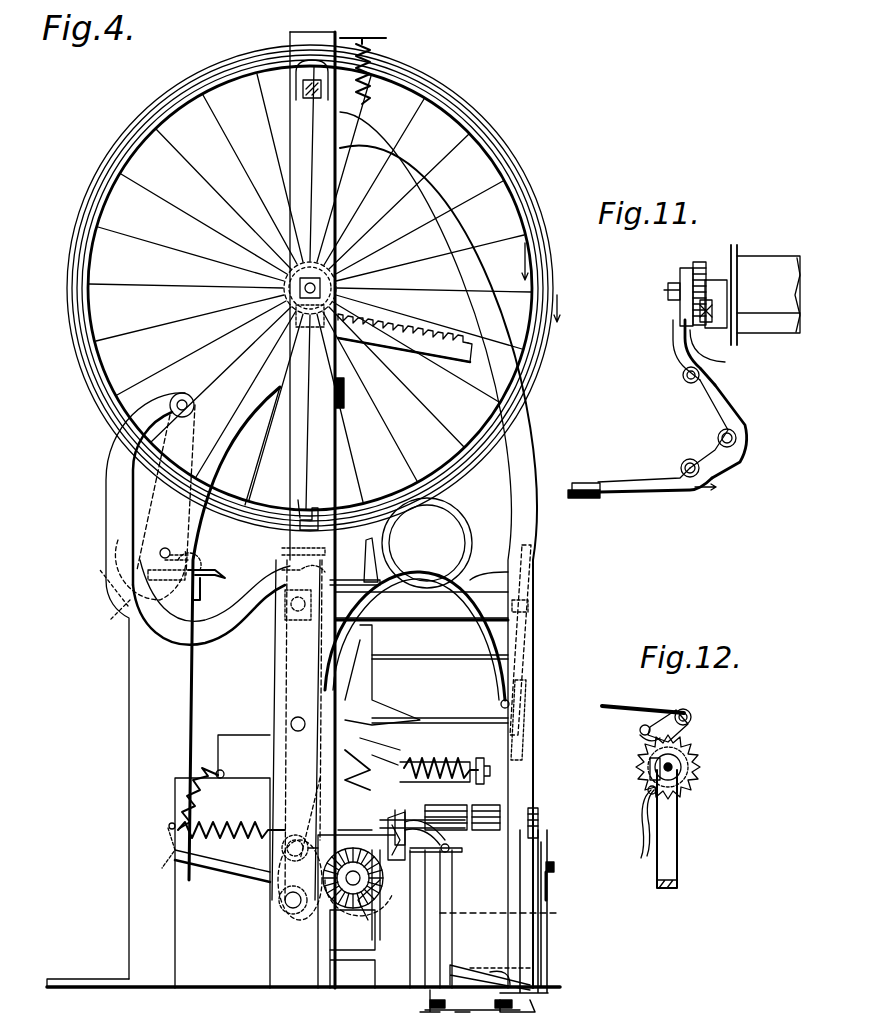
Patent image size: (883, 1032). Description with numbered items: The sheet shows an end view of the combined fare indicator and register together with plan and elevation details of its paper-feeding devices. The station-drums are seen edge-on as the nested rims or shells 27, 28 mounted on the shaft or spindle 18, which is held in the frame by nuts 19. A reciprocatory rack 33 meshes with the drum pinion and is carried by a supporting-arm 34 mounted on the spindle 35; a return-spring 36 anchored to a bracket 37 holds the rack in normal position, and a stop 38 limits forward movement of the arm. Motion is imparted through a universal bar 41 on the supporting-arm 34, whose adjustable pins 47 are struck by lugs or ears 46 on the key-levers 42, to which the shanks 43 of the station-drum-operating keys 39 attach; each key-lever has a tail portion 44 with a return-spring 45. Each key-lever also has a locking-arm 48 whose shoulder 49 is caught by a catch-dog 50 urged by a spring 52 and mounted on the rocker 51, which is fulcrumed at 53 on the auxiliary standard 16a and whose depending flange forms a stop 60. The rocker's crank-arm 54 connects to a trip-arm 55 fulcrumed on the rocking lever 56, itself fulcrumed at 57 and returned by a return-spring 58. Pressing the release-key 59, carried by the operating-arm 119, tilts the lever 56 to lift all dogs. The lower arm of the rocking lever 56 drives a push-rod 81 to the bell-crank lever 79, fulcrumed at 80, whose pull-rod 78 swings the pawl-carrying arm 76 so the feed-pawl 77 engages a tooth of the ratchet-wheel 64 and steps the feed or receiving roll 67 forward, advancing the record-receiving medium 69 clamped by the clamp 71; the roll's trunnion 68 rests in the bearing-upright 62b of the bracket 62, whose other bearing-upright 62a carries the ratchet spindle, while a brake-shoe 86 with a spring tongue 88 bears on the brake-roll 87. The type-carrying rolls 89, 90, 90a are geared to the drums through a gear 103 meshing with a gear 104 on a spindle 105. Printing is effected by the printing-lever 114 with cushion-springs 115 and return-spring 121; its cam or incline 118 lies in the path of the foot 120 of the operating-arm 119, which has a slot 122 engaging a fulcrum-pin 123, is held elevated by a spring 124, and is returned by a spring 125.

In FIG. 4, the rim or shell 28 is at (153, 118).
In FIG. 4, the rim or shell 27 is at (165, 110).
In FIG. 4, the shaft or spindle 18 is at (309, 276).
In FIG. 4, the nuts 19 is at (338, 262).
In FIG. 4, the slot 122 is at (312, 68).
In FIG. 4, the fulcrum-pin 123 is at (318, 100).
In FIG. 4, the spring 124 is at (373, 60).
In FIG. 4, the operating-arm 119 is at (530, 456).
In FIG. 4, the reciprocatory rack 33 is at (410, 328).
In FIG. 4, the stop 38 is at (348, 390).
In FIG. 4, the crank-arm 54 is at (178, 396).
In FIG. 4, the auxiliary standard 16a is at (215, 452).
In FIG. 4, the trip-arm 55 is at (236, 640).
In FIG. 4, the rocker 51 is at (128, 610).
In FIG. 4, the fulcrum 53 is at (170, 552).
In FIG. 4, the spring 52 is at (200, 565).
In FIG. 4, the catch-dog 50 is at (212, 580).
In FIG. 4, the stop 60 is at (208, 595).
In FIG. 4, the adjustable pins 47 is at (305, 515).
In FIG. 4, the universal bar 41 is at (282, 552).
In FIG. 4, the notch or shoulder 49 is at (282, 572).
In FIG. 4, the lugs or ears 46 is at (366, 544).
In FIG. 4, the locking-arm 48 is at (350, 580).
In FIG. 4, the spring 125 is at (460, 510).
In FIG. 4, the key-levers 42 is at (400, 636).
In FIG. 4, the shanks 43 is at (420, 712).
In FIG. 4, the spindle 105 is at (366, 680).
In FIG. 4, the release-key 59 is at (528, 618).
In FIG. 4, the station-drum-operating keys 39 is at (527, 700).
In FIG. 4, the rocking lever 56 is at (285, 660).
In FIG. 11, the rocking lever 56 is at (585, 500).
In FIG. 4, the fulcrum 57 is at (290, 723).
In FIG. 4, the supporting-arm 34 is at (265, 890).
In FIG. 4, the extension or tail portion 44 is at (222, 868).
In FIG. 4, the return-spring 58 is at (242, 838).
In FIG. 4, the return-spring 45 is at (210, 776).
In FIG. 4, the spindle 35 is at (290, 902).
In FIG. 4, the gear 103 is at (306, 918).
In FIG. 4, the push-rod 81 is at (330, 835).
In FIG. 11, the push-rod 81 is at (652, 488).
In FIG. 4, the bracket 62 is at (394, 926).
In FIG. 4, the gear 104 is at (348, 918).
In FIG. 4, the spring tongue 88 is at (378, 935).
In FIG. 12, the spring tongue 88 is at (646, 824).
In FIG. 4, the return-spring 36 is at (440, 760).
In FIG. 4, the bracket 37 is at (484, 756).
In FIG. 4, the pull-rod 78 is at (385, 820).
In FIG. 11, the pull-rod 78 is at (676, 348).
In FIG. 12, the pull-rod 78 is at (643, 699).
In FIG. 4, the pawl-carrying arm 76 is at (398, 812).
In FIG. 11, the pawl-carrying arm 76 is at (686, 268).
In FIG. 12, the pawl-carrying arm 76 is at (692, 720).
In FIG. 4, the feed-pawl 77 is at (425, 822).
In FIG. 11, the feed-pawl 77 is at (725, 362).
In FIG. 12, the feed-pawl 77 is at (640, 734).
In FIG. 4, the type-carrying roll 89 is at (448, 806).
In FIG. 4, the type-carrying roll 90 is at (488, 806).
In FIG. 4, the type-carrying roll 90a is at (536, 808).
In FIG. 4, the fulcrum 80 is at (460, 848).
In FIG. 11, the fulcrum 80 is at (738, 442).
In FIG. 4, the bell-crank lever 79 is at (458, 855).
In FIG. 11, the bell-crank lever 79 is at (722, 410).
In FIG. 4, the record-receiving medium 69 is at (530, 938).
In FIG. 4, the trunnion 68 is at (554, 868).
In FIG. 4, the bearing-upright 62b is at (548, 892).
In FIG. 4, the cam or incline 118 is at (458, 962).
In FIG. 4, the foot 120 is at (505, 968).
In FIG. 4, the cushion-springs 115 is at (515, 1004).
In FIG. 4, the printing-lever 114 is at (425, 1012).
In FIG. 4, the return-spring 121 is at (450, 1022).
In FIG. 11, the brake-roll 87 is at (712, 282).
In FIG. 12, the brake-roll 87 is at (682, 762).
In FIG. 11, the feed or receiving roll 67 is at (778, 262).
In FIG. 11, the clamp 71 is at (776, 320).
In FIG. 11, the ratchet-wheel 64 is at (700, 260).
In FIG. 12, the ratchet-wheel 64 is at (698, 778).
In FIG. 11, the brake-shoe 86 is at (710, 322).
In FIG. 12, the brake-shoe 86 is at (650, 762).
In FIG. 12, the bearing-upright 62a is at (677, 818).